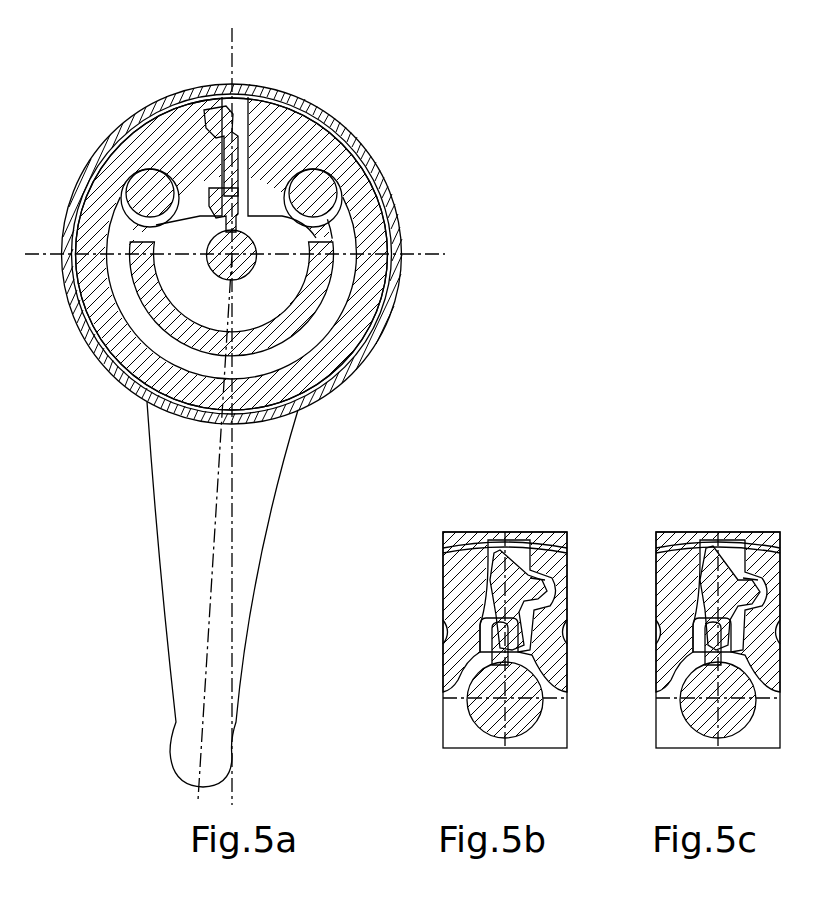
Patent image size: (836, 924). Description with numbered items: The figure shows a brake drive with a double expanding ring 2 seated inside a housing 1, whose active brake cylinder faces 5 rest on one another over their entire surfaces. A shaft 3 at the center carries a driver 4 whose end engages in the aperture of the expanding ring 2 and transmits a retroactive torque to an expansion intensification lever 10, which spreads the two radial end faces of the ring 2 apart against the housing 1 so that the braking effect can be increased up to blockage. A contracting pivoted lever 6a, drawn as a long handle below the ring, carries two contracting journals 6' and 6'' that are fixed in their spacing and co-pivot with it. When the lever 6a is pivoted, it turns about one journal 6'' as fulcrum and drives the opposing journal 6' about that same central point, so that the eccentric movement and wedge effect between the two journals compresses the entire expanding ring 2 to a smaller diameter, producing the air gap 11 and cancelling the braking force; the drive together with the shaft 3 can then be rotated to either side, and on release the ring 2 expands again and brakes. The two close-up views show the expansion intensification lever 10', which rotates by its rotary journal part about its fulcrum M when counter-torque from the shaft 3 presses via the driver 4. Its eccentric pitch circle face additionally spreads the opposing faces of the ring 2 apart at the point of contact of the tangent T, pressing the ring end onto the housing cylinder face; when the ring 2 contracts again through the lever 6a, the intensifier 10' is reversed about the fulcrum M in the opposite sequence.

In FIG. 5A, the housing 1 is at (326, 121).
In FIG. 5A, the double expanding ring 2 is at (291, 156).
In FIG. 5B, the double expanding ring 2 is at (557, 558).
In FIG. 5C, the double expanding ring 2 is at (770, 558).
In FIG. 5A, the shaft 3 is at (246, 266).
In FIG. 5B, the shaft 3 is at (520, 700).
In FIG. 5C, the shaft 3 is at (733, 700).
In FIG. 5A, the driver 4 is at (207, 212).
In FIG. 5B, the driver 4 is at (497, 652).
In FIG. 5C, the driver 4 is at (710, 652).
In FIG. 5A, the brake cylinder face 5 is at (400, 280).
In FIG. 5A, the contracting journal 6' is at (375, 173).
In FIG. 5A, the contracting journal 6'' is at (96, 182).
In FIG. 5A, the contracting pivoted lever 6a is at (245, 555).
In FIG. 5A, the expansion intensification lever 10 is at (142, 141).
In FIG. 5B, the expansion intensification lever 10' is at (518, 562).
In FIG. 5C, the expansion intensification lever 10' is at (730, 562).
In FIG. 5A, the air gap 11 is at (281, 104).
In FIG. 5B, the tangent T is at (487, 567).
In FIG. 5C, the tangent T is at (700, 567).
In FIG. 5B, the fulcrum M is at (528, 585).
In FIG. 5C, the fulcrum M is at (741, 585).